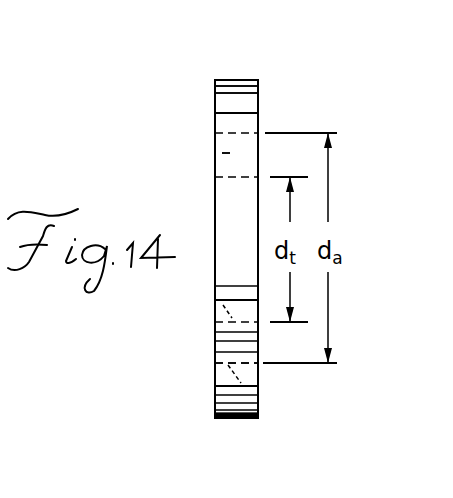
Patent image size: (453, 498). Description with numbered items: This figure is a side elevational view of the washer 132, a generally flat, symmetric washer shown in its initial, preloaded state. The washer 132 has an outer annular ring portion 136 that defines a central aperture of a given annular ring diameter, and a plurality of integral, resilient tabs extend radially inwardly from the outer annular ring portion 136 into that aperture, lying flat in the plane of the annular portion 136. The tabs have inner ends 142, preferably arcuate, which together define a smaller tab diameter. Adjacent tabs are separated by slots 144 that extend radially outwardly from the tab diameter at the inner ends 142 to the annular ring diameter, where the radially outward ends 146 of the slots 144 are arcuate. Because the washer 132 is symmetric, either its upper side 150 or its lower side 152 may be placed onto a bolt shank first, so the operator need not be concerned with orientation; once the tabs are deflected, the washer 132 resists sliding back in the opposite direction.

The washer 132 is at (268, 127).
The lower side 152 is at (257, 94).
The upper side 150 is at (215, 113).
The slots 144 is at (215, 152).
The inner ends 142 is at (215, 298).
The outer annular ring portion 136 is at (222, 389).
The radially outward ends 146 is at (258, 387).